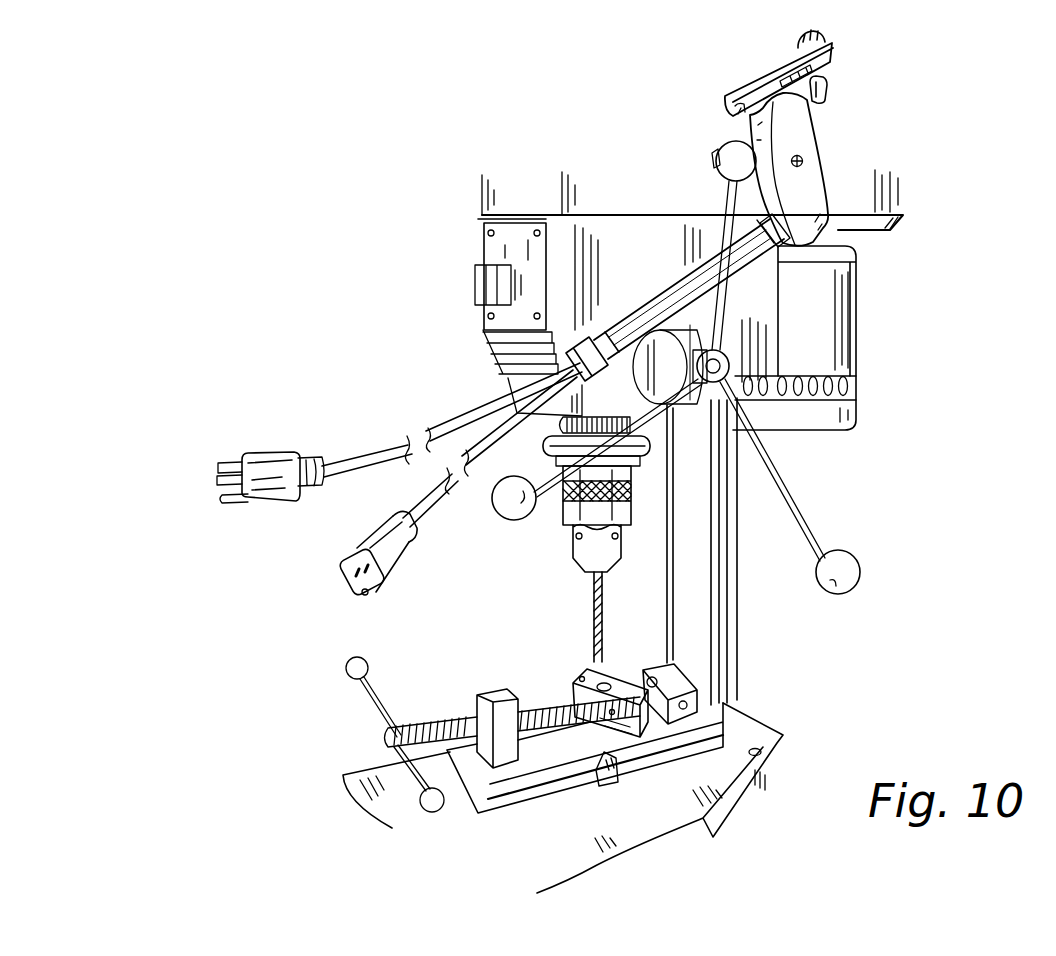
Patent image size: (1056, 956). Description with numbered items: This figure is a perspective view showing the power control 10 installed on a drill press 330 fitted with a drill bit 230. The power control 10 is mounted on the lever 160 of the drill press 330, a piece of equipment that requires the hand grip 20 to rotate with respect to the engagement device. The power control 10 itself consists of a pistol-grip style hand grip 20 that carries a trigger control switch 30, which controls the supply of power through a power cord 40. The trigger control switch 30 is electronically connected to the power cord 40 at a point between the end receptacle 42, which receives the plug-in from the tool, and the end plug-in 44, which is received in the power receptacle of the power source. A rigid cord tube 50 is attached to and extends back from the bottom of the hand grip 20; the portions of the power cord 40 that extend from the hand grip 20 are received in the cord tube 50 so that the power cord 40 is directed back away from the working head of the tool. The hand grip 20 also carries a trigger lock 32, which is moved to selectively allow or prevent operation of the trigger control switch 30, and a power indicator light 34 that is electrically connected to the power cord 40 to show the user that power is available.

The power control 10 is at (680, 97).
The hand grip 20 is at (810, 202).
The trigger control switch 30 is at (807, 133).
The trigger lock 32 is at (804, 68).
The power indicator light 34 is at (824, 26).
The power cord 40 is at (373, 445).
The end receptacle 42 is at (360, 552).
The end plug-in 44 is at (291, 456).
The rigid cord tube 50 is at (667, 302).
The lever 160 is at (731, 202).
The drill bit 230 is at (594, 602).
The drill press 330 is at (748, 629).